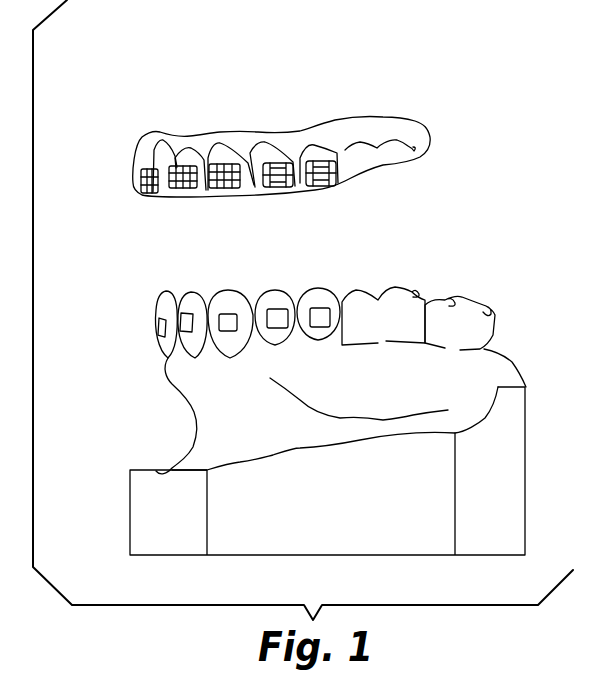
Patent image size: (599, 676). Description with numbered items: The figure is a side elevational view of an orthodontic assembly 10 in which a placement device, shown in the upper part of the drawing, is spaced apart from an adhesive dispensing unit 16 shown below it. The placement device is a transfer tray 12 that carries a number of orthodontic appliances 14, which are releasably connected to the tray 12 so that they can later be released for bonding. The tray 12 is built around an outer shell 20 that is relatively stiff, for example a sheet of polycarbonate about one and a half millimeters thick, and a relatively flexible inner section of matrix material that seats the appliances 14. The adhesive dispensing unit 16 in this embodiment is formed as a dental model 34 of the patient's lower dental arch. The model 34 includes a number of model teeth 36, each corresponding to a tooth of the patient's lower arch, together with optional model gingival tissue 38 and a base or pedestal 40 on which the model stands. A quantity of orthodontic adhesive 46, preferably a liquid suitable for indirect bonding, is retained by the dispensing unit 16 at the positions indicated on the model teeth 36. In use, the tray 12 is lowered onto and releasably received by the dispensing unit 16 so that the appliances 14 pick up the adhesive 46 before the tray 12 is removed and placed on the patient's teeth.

The orthodontic assembly 10 is at (284, 104).
The transfer tray 12 is at (356, 116).
The orthodontic appliances 14 is at (321, 161).
The outer shell 20 is at (407, 128).
The adhesive dispensing unit 16 is at (288, 404).
The model teeth 36 is at (190, 301).
The orthodontic adhesive 46 is at (315, 308).
The dental model 34 is at (176, 397).
The model gingival tissue 38 is at (215, 432).
The base 40 is at (143, 523).